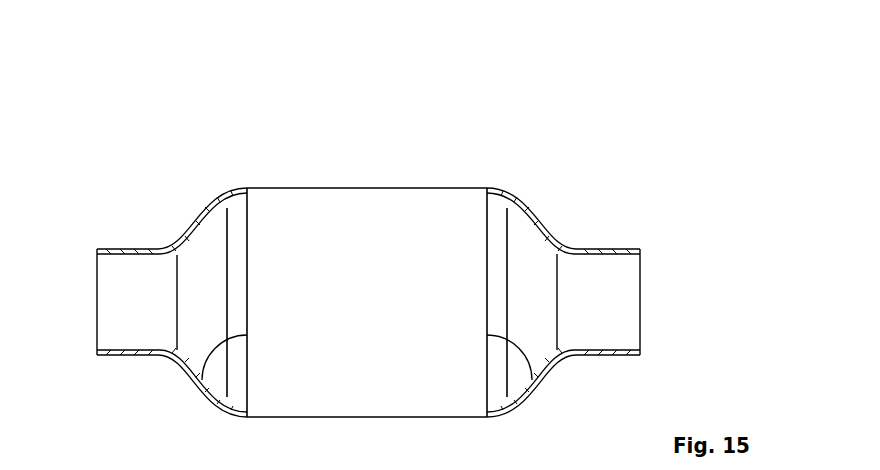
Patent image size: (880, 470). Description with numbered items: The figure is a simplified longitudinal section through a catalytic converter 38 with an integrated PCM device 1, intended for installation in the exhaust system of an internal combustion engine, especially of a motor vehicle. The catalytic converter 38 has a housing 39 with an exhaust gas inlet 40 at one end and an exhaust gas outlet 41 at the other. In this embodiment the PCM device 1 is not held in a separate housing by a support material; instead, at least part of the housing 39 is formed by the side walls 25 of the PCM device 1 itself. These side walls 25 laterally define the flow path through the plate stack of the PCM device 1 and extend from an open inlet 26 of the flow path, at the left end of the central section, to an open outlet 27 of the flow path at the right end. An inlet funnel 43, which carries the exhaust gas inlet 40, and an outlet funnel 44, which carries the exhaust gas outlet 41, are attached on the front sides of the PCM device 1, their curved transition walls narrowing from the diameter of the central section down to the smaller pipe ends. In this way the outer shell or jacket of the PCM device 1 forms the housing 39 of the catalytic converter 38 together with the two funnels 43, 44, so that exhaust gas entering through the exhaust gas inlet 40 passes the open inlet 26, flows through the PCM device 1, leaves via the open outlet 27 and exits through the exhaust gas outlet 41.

The PCM device 1 is at (369, 310).
The side walls 25 is at (350, 188).
The open inlet 26 is at (196, 387).
The open outlet 27 is at (533, 385).
The catalytic converter 38 is at (644, 182).
The housing 39 is at (226, 192).
The exhaust gas inlet 40 is at (97, 295).
The exhaust gas outlet 41 is at (641, 295).
The inlet funnel 43 is at (200, 217).
The outlet funnel 44 is at (535, 215).